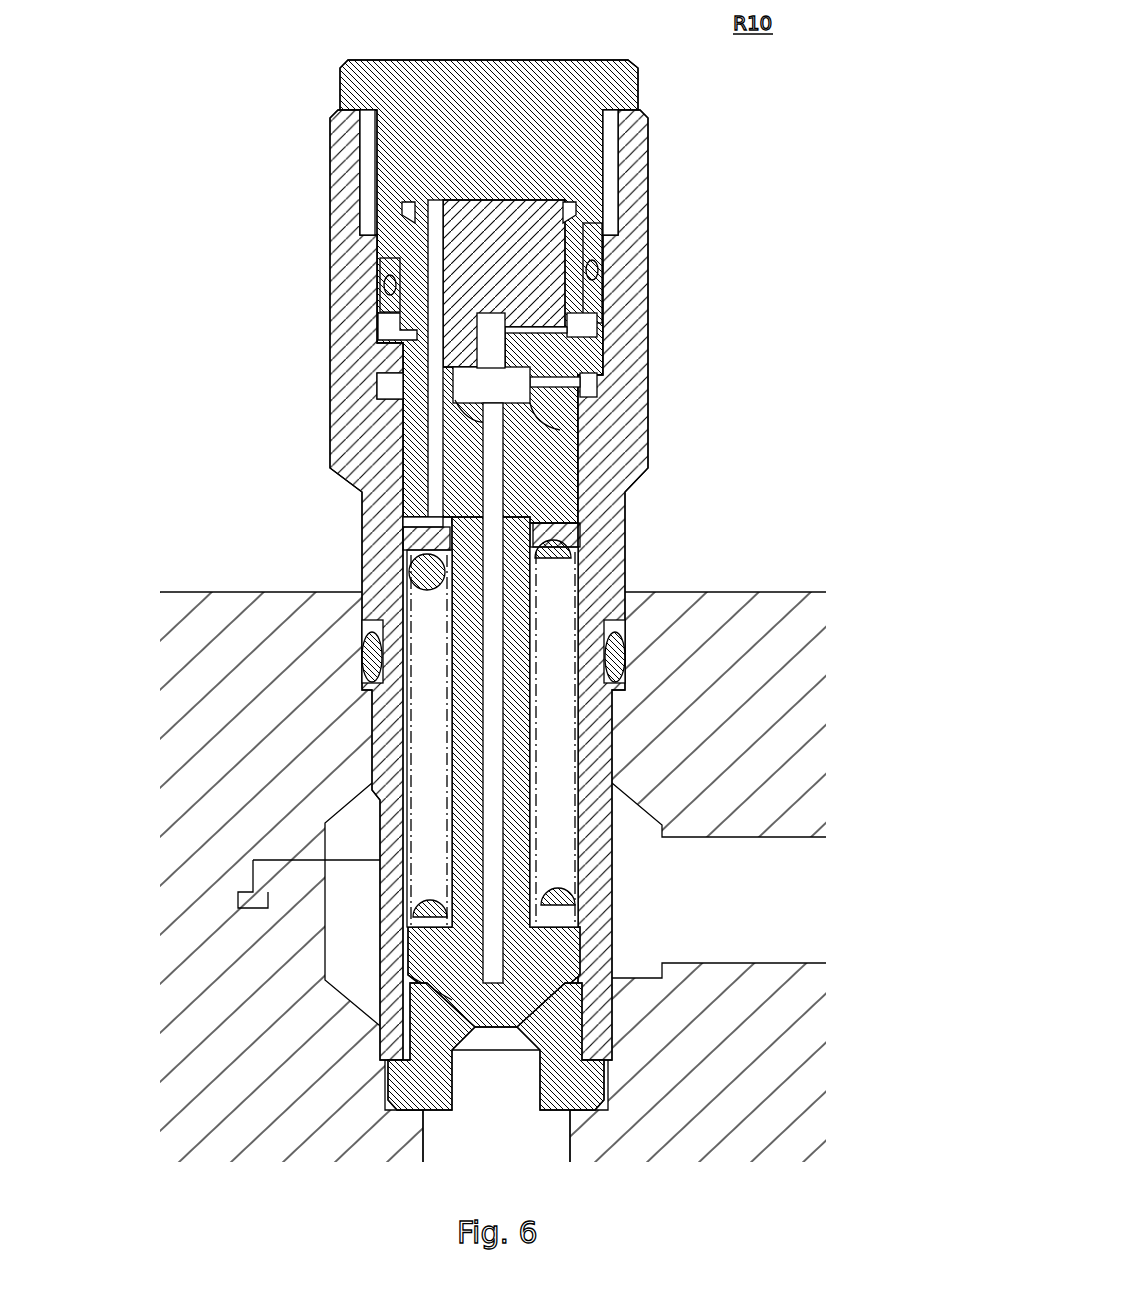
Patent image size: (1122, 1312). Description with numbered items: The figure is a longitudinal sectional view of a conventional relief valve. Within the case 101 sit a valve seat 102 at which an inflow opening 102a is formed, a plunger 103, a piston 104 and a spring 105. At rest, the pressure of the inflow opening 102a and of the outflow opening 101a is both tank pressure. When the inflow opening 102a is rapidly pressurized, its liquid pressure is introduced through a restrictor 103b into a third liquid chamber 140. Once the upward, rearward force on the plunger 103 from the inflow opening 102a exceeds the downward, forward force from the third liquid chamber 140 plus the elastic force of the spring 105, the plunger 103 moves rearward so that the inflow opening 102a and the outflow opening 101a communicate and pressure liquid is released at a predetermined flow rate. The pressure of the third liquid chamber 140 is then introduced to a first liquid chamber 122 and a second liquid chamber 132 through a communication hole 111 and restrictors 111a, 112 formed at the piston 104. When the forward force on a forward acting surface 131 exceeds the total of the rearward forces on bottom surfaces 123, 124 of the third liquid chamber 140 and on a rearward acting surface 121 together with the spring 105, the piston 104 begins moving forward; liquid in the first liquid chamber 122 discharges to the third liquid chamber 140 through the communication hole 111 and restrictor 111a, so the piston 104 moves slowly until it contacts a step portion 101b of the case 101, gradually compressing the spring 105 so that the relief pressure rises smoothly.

The case 101 is at (612, 700).
The outflow opening 101a is at (600, 970).
The step portion 101b is at (390, 380).
The valve seat 102 is at (590, 1080).
The inflow opening 102a is at (496, 1080).
The plunger 103 is at (520, 775).
The restrictor 103b is at (445, 967).
The piston 104 is at (540, 270).
The spring 105 is at (560, 905).
The communication hole 111 is at (545, 405).
The restrictor 111a is at (532, 430).
The restrictor 112 is at (575, 275).
The rearward acting surface 121 is at (588, 373).
The first liquid chamber 122 is at (548, 388).
The bottom surface 123 is at (470, 380).
The bottom surface 124 is at (493, 398).
The forward acting surface 131 is at (592, 318).
The second liquid chamber 132 is at (582, 333).
The third liquid chamber 140 is at (450, 430).